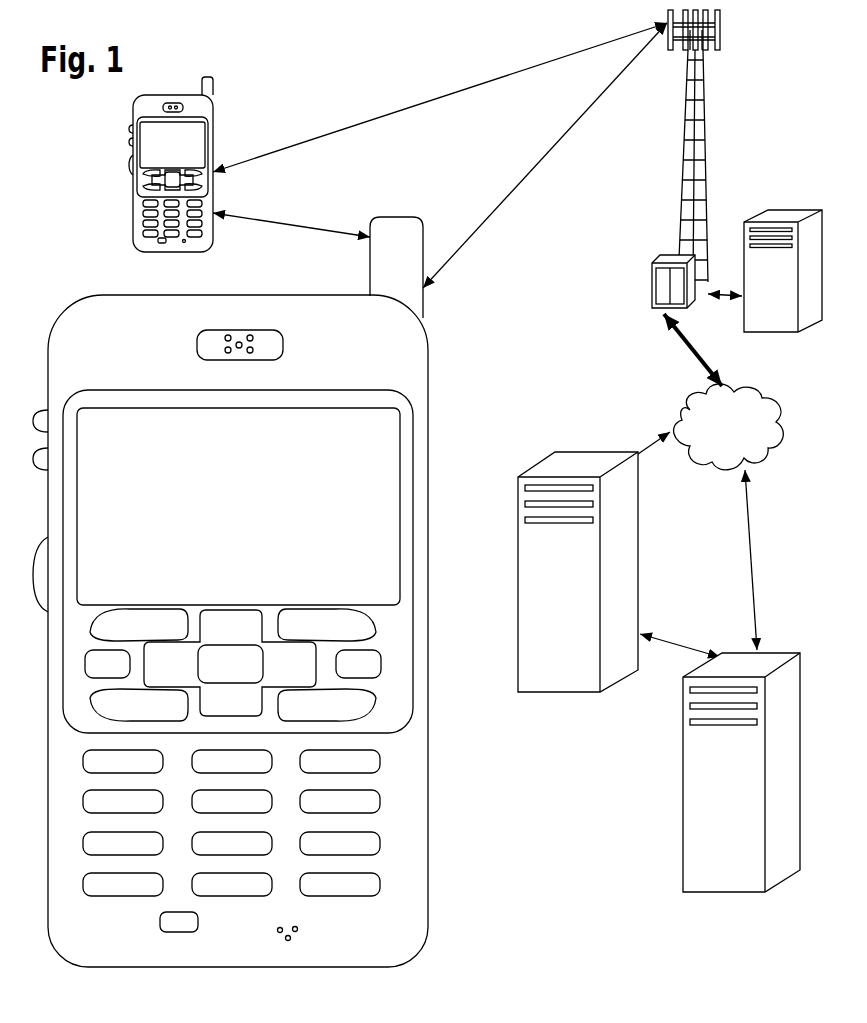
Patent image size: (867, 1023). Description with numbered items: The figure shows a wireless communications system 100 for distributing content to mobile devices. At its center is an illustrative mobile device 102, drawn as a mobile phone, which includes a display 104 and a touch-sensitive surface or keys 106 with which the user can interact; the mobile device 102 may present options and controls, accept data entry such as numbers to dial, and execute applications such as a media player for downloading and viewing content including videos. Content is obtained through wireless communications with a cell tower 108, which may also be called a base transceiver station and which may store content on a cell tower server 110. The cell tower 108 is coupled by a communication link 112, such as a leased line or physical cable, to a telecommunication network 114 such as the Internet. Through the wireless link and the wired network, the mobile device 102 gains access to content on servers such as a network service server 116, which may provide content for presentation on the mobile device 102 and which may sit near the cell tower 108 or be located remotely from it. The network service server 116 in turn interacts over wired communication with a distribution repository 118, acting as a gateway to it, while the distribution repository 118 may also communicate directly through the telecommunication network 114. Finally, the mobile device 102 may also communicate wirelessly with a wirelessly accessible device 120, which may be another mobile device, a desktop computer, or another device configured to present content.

The wireless communications system 100 is at (485, 340).
The mobile device 102 is at (112, 972).
The display 104 is at (385, 416).
The keys 106 is at (430, 607).
The cell tower 108 is at (680, 172).
The cell tower server 110 is at (782, 333).
The communication link 112 is at (690, 360).
The telecommunication network 114 is at (712, 470).
The network service server 116 is at (533, 692).
The distribution repository 118 is at (716, 893).
The wirelessly accessible device 120 is at (218, 155).